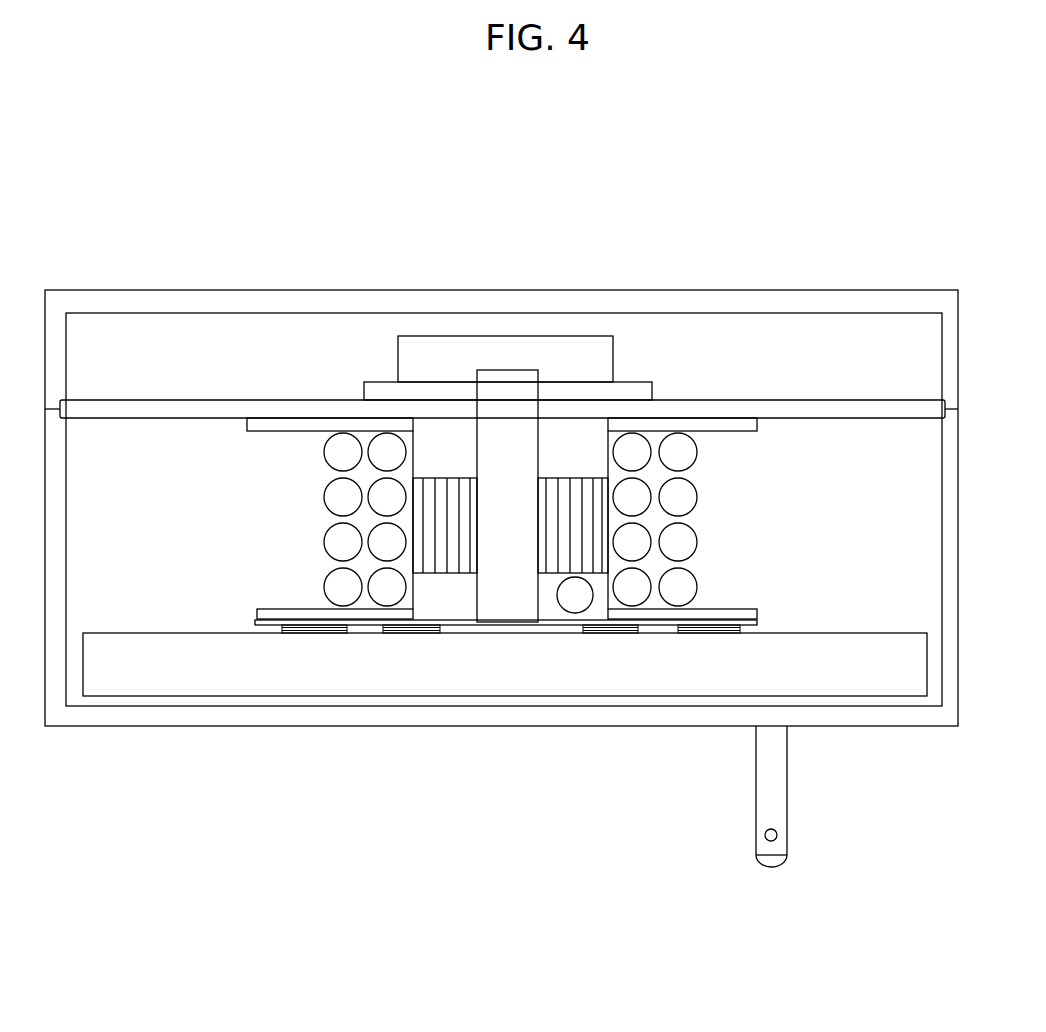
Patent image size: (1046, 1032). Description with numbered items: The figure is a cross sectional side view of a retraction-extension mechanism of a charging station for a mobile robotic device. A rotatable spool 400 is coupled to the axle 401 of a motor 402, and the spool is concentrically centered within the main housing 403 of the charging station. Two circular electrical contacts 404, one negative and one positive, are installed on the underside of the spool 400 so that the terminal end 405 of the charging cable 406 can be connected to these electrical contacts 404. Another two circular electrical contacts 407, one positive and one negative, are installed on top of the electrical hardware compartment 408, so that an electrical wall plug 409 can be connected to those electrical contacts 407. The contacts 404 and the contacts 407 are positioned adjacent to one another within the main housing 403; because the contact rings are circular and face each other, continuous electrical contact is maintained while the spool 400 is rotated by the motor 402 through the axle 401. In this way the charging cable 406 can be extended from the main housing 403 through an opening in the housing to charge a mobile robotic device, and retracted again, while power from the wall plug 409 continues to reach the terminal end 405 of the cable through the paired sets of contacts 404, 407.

The rotatable spool 400 is at (608, 520).
The axle 401 is at (508, 496).
The motor 402 is at (508, 368).
The main housing 403 is at (802, 288).
The circular electrical contacts 404 is at (262, 624).
The terminal end 405 is at (575, 613).
The charging cable 406 is at (690, 460).
The circular electrical contacts 407 is at (313, 633).
The electrical hardware compartment 408 is at (505, 664).
The electrical wall plug 409 is at (787, 776).